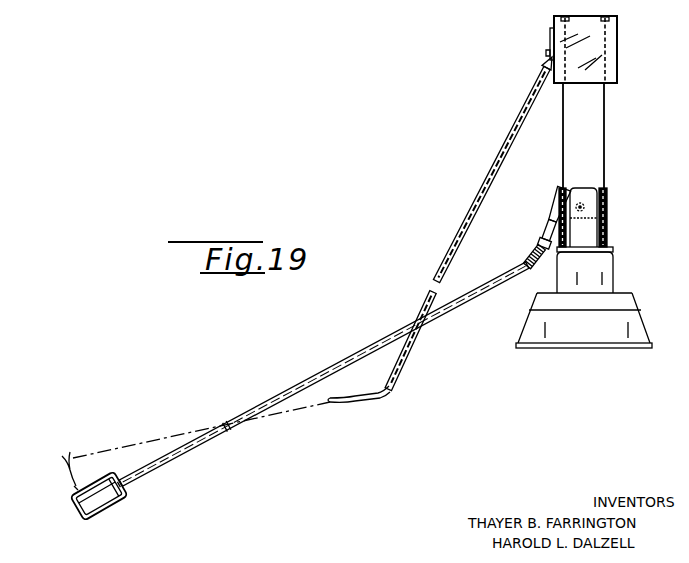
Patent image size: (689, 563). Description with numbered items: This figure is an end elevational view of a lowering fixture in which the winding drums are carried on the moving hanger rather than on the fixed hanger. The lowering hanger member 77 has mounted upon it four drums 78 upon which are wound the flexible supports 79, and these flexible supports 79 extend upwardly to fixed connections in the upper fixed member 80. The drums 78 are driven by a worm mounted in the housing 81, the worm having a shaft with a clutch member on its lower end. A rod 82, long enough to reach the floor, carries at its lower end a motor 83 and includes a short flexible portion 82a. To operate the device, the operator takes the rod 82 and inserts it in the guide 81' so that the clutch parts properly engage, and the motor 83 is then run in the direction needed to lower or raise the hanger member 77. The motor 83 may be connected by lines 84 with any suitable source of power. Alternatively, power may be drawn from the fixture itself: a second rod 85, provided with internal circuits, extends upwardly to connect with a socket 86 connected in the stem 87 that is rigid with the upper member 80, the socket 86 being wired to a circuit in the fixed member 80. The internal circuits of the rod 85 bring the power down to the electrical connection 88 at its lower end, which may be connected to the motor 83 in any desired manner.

The lowering hanger member 77 is at (634, 323).
The drums 78 is at (560, 196).
The flexible supports 79 is at (563, 128).
The upper fixed member 80 is at (606, 50).
The housing 81 is at (543, 204).
The guide 81' is at (537, 234).
The rod 82 is at (226, 427).
The short flexible portion 82a is at (527, 262).
The motor 83 is at (112, 512).
The lines 84 is at (70, 472).
The second rod 85 is at (478, 202).
The socket 86 is at (545, 60).
The stem 87 is at (548, 53).
The electrical connection 88 is at (331, 401).